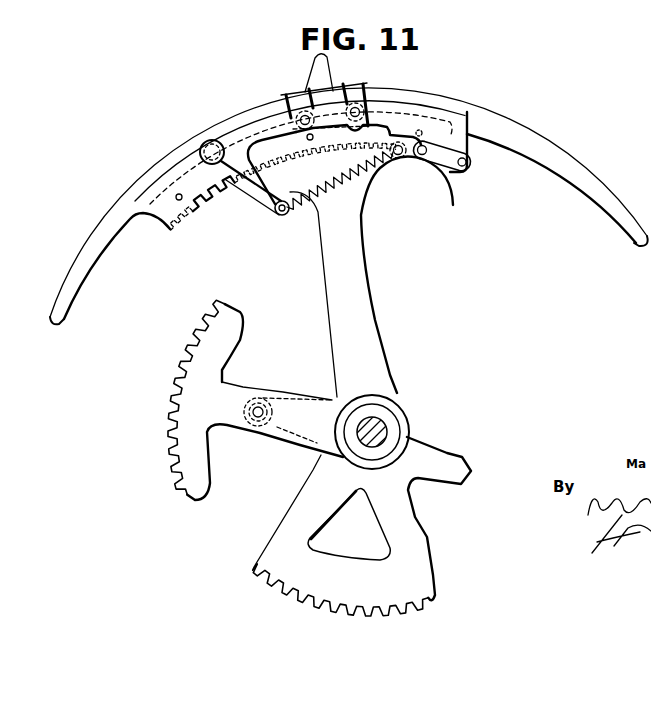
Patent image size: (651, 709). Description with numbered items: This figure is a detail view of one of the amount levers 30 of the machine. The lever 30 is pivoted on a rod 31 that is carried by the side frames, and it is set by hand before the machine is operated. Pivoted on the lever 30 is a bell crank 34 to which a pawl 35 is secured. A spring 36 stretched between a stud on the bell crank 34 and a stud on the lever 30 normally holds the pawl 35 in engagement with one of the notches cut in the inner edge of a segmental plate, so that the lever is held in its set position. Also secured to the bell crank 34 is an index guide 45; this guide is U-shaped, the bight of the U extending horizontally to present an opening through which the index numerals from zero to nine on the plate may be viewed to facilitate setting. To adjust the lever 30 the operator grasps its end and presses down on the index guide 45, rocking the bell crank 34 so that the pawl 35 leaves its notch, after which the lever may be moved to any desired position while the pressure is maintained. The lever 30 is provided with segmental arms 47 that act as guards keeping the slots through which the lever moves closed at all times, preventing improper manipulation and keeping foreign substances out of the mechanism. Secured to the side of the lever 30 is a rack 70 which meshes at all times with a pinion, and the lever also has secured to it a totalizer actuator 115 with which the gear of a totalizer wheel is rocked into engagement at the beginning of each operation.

The amount lever 30 is at (363, 262).
The rod 31 is at (356, 424).
The bell crank 34 is at (398, 98).
The pawl 35 is at (447, 170).
The spring 36 is at (328, 188).
The index guide 45 is at (340, 84).
The segmental arms 47 is at (103, 212).
The rack 70 is at (208, 197).
The totalizer actuator 115 is at (218, 378).